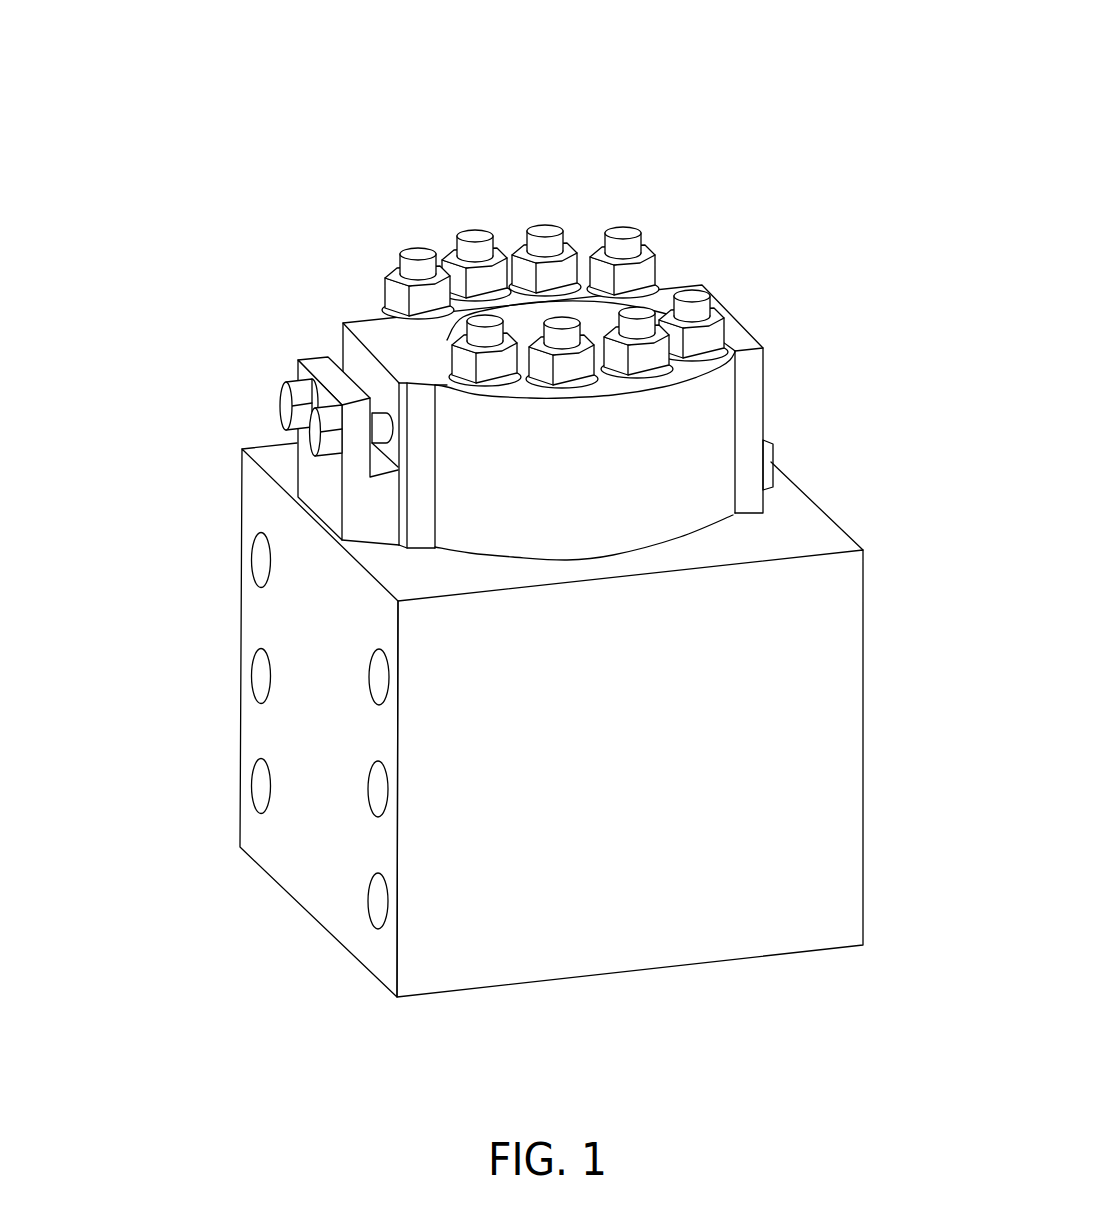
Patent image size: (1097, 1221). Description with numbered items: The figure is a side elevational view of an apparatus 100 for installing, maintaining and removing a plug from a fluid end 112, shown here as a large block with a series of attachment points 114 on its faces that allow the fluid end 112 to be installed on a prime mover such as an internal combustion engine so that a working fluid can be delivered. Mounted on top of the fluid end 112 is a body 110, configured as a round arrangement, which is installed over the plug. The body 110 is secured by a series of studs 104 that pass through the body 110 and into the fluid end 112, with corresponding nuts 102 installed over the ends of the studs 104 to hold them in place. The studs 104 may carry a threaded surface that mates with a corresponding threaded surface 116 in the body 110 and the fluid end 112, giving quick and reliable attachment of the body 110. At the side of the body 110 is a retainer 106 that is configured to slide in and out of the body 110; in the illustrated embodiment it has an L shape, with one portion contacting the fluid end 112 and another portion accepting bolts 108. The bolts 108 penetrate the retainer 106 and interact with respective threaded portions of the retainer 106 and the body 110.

The apparatus 100 is at (810, 210).
The nuts 102 is at (392, 272).
The studs 104 is at (467, 236).
The retainer 106 is at (238, 379).
The bolts 108 is at (280, 407).
The body 110 is at (705, 448).
The fluid end 112 is at (248, 624).
The attachment points 114 is at (253, 782).
The threaded surface 116 is at (368, 390).